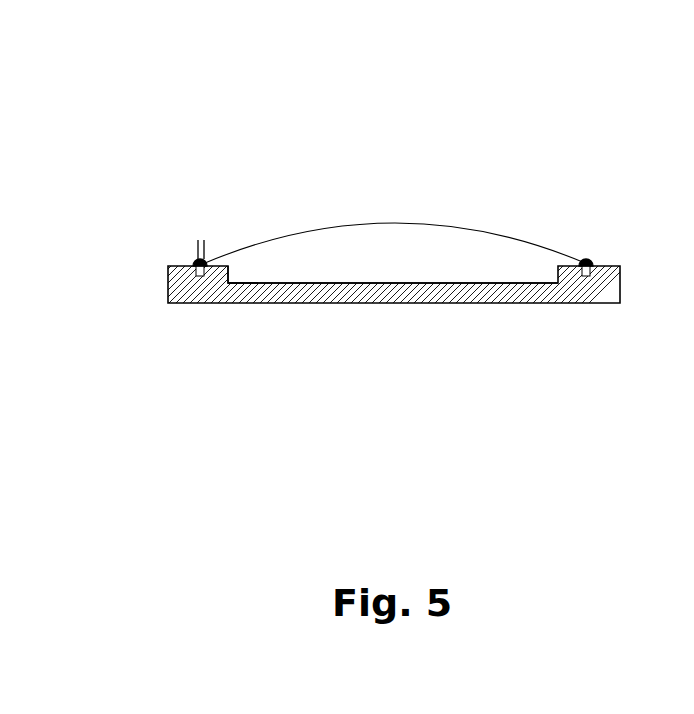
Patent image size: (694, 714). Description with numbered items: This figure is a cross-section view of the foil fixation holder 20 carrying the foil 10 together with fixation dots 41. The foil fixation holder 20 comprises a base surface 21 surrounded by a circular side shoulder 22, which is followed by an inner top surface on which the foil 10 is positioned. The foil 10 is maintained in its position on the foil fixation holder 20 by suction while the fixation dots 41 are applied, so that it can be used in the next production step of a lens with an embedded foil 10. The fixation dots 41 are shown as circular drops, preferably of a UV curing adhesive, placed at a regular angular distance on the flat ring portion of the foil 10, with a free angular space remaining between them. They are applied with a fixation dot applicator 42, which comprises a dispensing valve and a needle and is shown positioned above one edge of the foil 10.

The foil 10 is at (336, 227).
The foil fixation holder 20 is at (590, 293).
The base surface 21 is at (333, 283).
The circular side shoulder 22 is at (240, 283).
The fixation dots 41 is at (588, 263).
The fixation dot applicator 42 is at (199, 240).